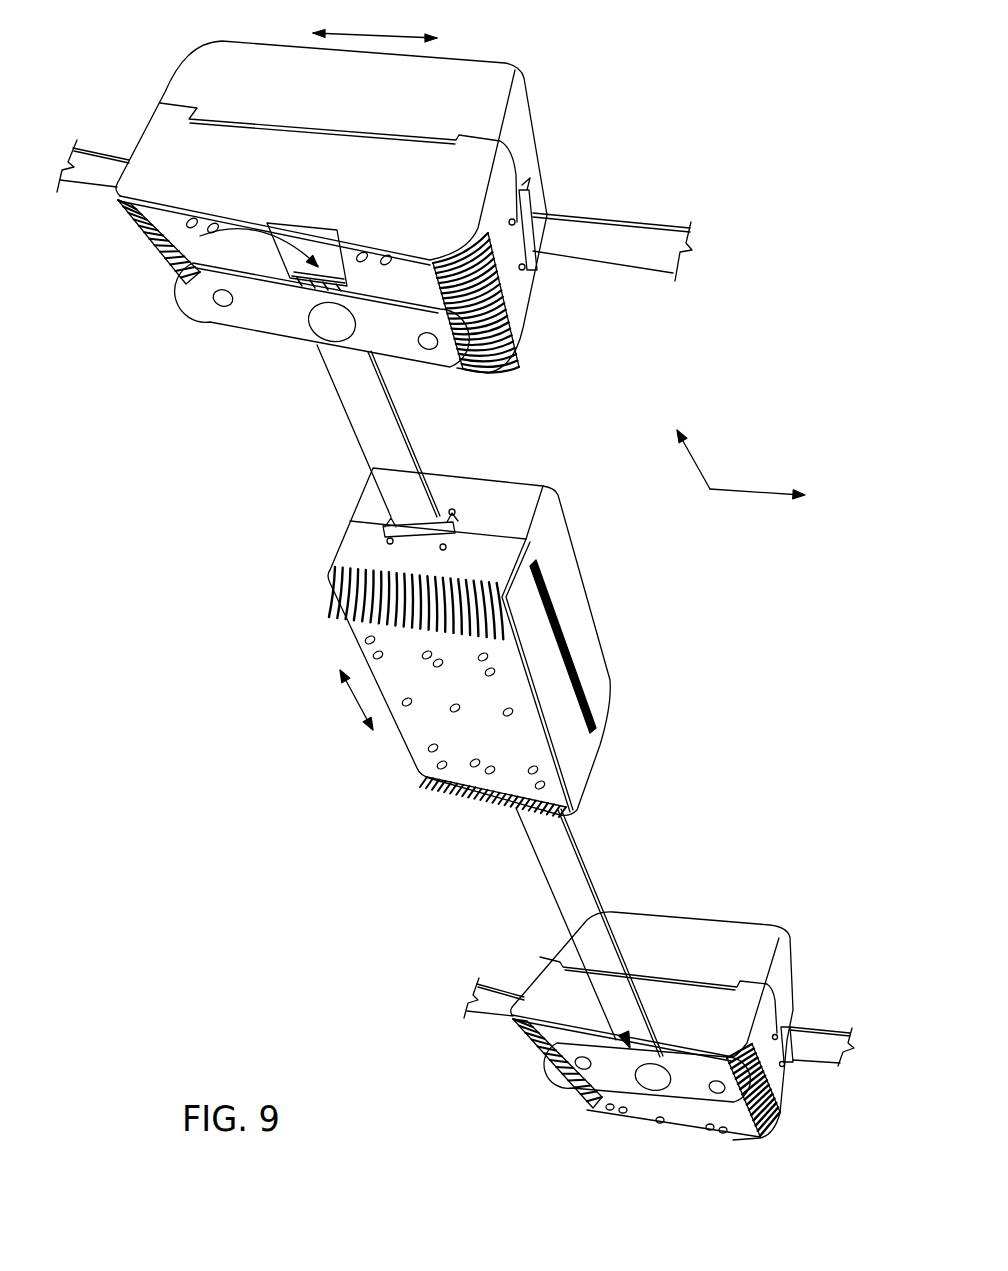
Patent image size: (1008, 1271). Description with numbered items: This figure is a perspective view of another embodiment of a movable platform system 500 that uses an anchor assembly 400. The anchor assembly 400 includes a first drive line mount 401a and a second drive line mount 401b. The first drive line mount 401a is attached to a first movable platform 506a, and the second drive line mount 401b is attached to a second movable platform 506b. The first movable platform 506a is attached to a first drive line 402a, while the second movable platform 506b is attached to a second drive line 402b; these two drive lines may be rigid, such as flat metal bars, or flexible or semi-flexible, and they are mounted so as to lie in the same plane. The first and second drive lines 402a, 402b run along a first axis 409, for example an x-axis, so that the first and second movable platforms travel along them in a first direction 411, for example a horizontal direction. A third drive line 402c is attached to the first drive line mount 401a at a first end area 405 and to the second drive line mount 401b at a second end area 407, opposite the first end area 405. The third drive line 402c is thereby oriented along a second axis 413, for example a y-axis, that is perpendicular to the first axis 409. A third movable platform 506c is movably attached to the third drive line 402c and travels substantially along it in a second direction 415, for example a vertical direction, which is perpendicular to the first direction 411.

The movable platform system 500 is at (734, 78).
The anchor assembly 400 is at (444, 386).
The first drive line mount 401a is at (266, 318).
The second drive line mount 401b is at (612, 1078).
The first drive line 402a is at (641, 234).
The second drive line 402b is at (822, 1040).
The third drive line 402c is at (576, 882).
The first end area 405 is at (172, 243).
The second end area 407 is at (530, 1037).
The first axis 409 is at (760, 495).
The first direction 411 is at (378, 30).
The second axis 413 is at (698, 467).
The second direction 415 is at (353, 697).
The first movable platform 506a is at (525, 73).
The second movable platform 506b is at (548, 982).
The third movable platform 506c is at (572, 567).